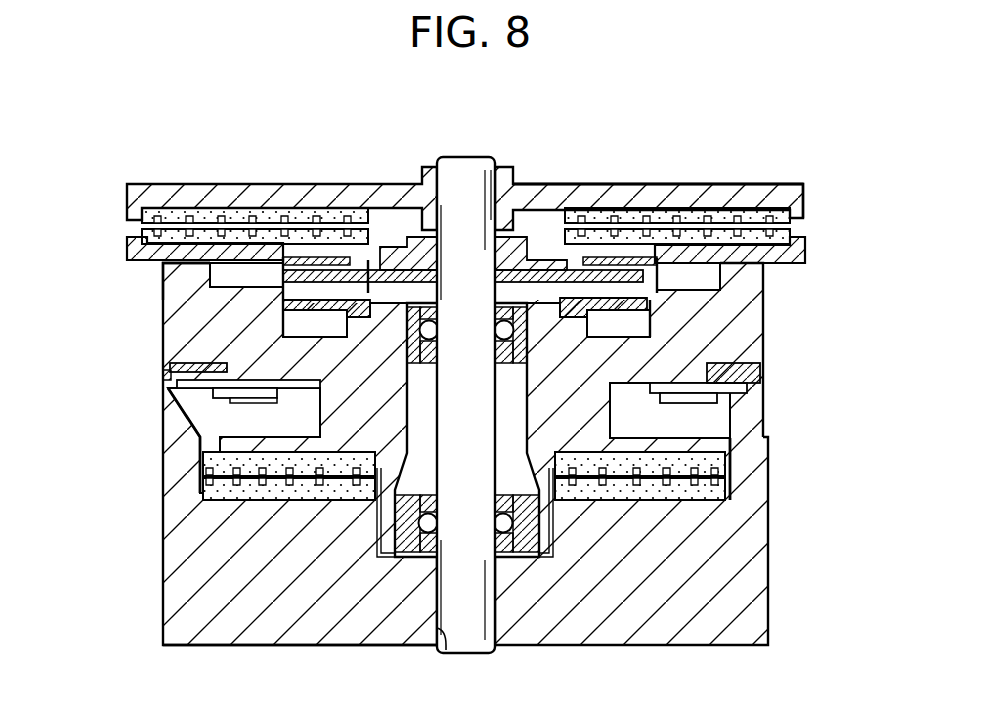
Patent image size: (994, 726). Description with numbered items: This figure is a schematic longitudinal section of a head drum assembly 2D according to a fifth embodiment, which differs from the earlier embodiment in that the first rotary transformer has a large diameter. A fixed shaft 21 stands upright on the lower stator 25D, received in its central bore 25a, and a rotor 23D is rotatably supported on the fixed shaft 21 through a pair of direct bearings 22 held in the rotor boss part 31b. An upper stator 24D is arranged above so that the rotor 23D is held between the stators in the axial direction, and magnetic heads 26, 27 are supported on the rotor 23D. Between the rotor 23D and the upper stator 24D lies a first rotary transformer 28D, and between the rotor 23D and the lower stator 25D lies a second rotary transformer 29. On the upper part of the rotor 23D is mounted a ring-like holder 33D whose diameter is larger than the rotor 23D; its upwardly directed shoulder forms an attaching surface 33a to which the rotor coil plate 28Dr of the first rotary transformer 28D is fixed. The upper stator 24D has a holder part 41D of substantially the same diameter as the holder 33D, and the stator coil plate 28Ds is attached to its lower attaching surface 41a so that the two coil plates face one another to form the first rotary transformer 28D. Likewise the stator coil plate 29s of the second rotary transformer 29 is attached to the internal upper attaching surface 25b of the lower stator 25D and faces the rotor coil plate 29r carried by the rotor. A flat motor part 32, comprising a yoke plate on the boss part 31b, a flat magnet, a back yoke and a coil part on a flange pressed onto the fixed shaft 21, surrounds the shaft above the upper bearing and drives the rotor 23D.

The head drum assembly 2D is at (789, 160).
The fixed shaft 21 is at (463, 168).
The bearings 22 is at (523, 542).
The rotor 23D is at (757, 311).
The upper stator 24D is at (790, 192).
The lower stator 25D is at (758, 530).
The lower stator bore 25a is at (438, 628).
The attaching surface 25b is at (265, 497).
The magnetic heads 26 is at (165, 378).
The magnetic heads 27 is at (455, 396).
The first rotary transformer 28D is at (790, 218).
The rotor coil plate 28Dr is at (140, 232).
The stator coil plate 28Ds is at (170, 212).
The second rotary transformer 29 is at (740, 470).
The rotor coil plate 29r is at (205, 460).
The stator coil plate 29s is at (217, 494).
The boss part 31b is at (275, 458).
The motor part 32 is at (387, 285).
The ring-like holder 33D is at (800, 253).
The attaching surface 33a is at (163, 263).
The holder part 41D is at (568, 184).
The attaching surface 41a is at (632, 215).